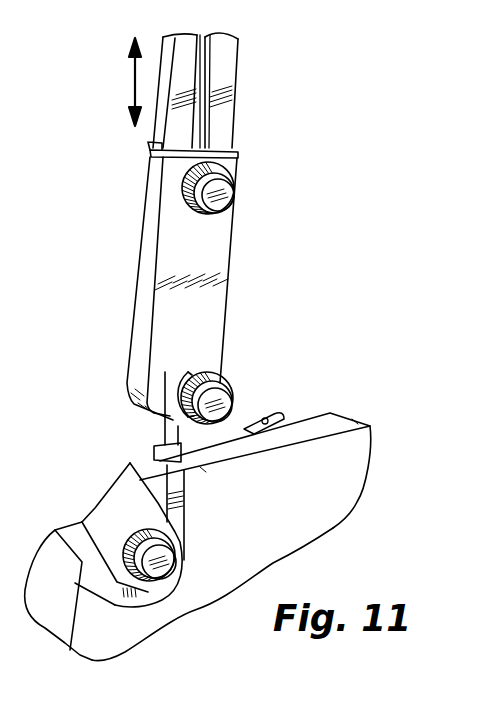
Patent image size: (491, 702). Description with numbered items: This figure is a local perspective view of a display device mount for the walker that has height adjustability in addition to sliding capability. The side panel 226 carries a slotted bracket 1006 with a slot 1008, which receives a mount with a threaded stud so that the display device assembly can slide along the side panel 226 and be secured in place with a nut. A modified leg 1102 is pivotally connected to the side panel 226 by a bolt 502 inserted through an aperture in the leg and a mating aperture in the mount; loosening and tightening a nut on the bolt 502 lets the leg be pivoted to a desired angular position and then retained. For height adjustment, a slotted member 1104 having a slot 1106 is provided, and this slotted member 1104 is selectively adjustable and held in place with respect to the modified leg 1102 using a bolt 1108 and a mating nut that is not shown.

The modified leg 1102 is at (147, 250).
The slotted member 1104 is at (232, 127).
The slot 1106 is at (208, 63).
The bolt 1108 is at (224, 197).
The bolt 502 is at (231, 397).
The slot 1008 is at (245, 418).
The slotted bracket 1006 is at (277, 418).
The side panel 226 is at (305, 508).